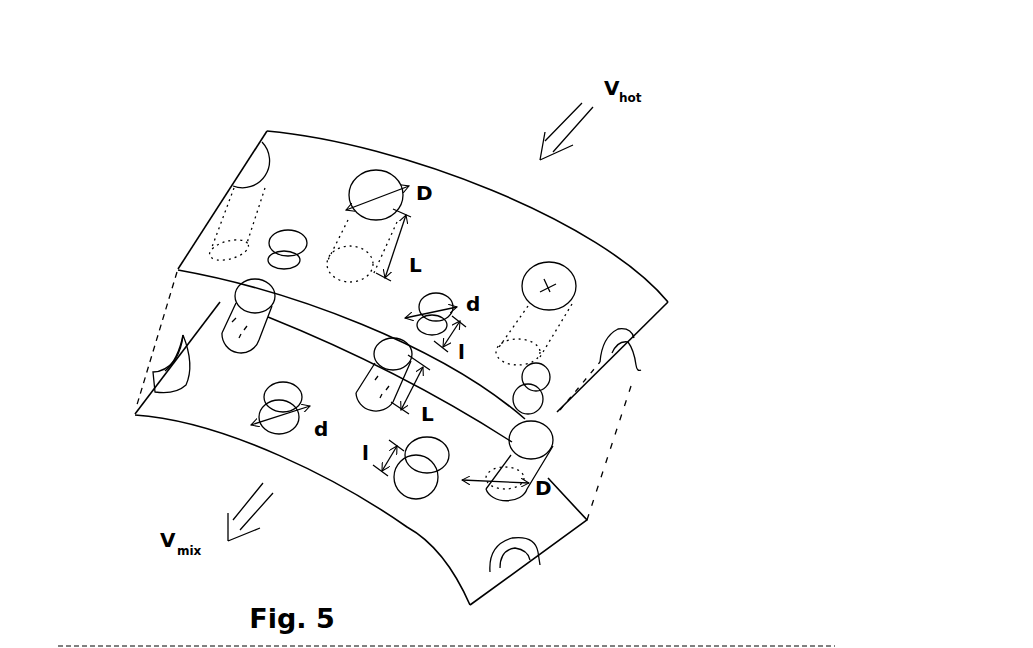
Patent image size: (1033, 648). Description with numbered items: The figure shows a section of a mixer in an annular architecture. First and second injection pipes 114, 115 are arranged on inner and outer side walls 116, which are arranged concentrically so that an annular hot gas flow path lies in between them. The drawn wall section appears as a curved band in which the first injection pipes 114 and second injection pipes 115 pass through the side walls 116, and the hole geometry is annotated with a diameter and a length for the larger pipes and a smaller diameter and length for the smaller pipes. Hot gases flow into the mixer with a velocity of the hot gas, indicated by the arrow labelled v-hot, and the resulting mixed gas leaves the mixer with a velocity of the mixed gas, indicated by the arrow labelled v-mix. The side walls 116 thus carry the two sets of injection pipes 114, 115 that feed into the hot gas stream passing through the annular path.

The first injection pipes 114 is at (233, 317).
The second injection pipes 115 is at (420, 492).
The inner and outer side walls 116 is at (615, 287).